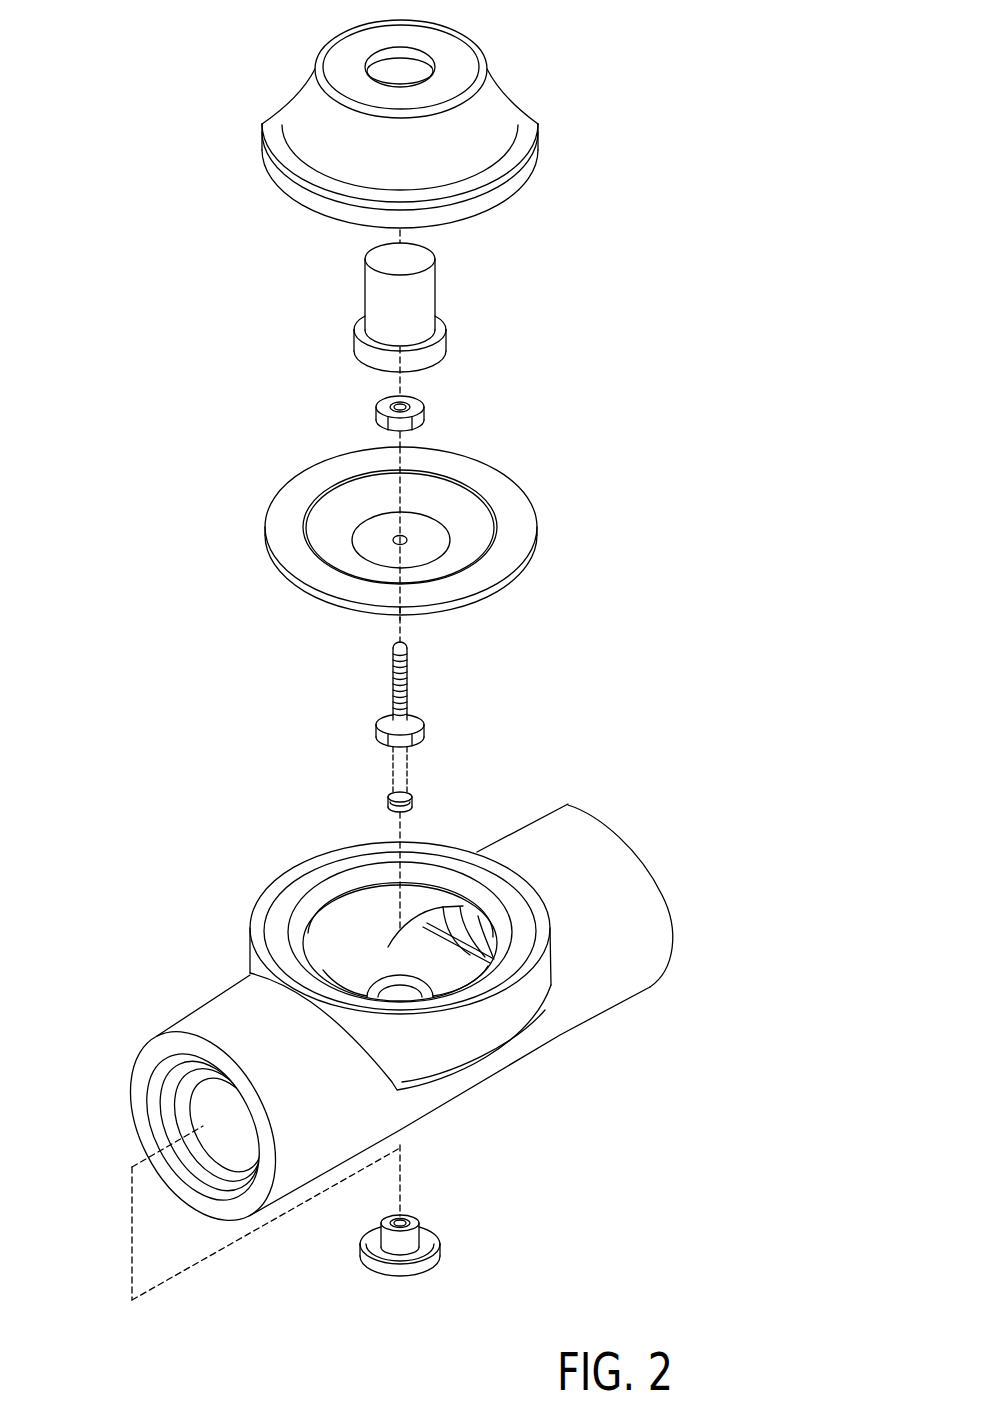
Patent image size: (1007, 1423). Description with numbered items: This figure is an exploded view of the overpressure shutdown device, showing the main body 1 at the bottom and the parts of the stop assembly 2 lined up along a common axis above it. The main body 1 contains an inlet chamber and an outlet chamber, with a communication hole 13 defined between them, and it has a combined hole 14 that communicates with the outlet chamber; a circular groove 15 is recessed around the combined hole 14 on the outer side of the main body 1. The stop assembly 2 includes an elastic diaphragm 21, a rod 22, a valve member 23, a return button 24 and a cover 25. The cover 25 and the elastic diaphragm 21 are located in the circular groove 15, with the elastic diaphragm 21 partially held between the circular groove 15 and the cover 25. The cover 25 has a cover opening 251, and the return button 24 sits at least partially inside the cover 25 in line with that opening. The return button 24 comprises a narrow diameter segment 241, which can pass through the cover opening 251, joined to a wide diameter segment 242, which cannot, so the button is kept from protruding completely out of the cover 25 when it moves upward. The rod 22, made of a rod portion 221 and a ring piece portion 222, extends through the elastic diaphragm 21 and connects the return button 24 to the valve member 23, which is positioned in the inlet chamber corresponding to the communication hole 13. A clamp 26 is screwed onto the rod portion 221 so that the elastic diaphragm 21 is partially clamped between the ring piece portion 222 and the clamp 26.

The main body 1 is at (164, 924).
The communication hole 13 is at (420, 985).
The combined hole 14 is at (289, 904).
The circular groove 15 is at (318, 892).
The stop assembly 2 is at (680, 345).
The elastic diaphragm 21 is at (515, 493).
The rod 22 is at (540, 648).
The rod portion 221 is at (408, 670).
The ring piece portion 222 is at (425, 728).
The valve member 23 is at (432, 1250).
The return button 24 is at (578, 258).
The narrow diameter segment 241 is at (427, 280).
The wide diameter segment 242 is at (445, 345).
The cover 25 is at (303, 108).
The cover opening 251 is at (432, 60).
The clamp 26 is at (420, 410).